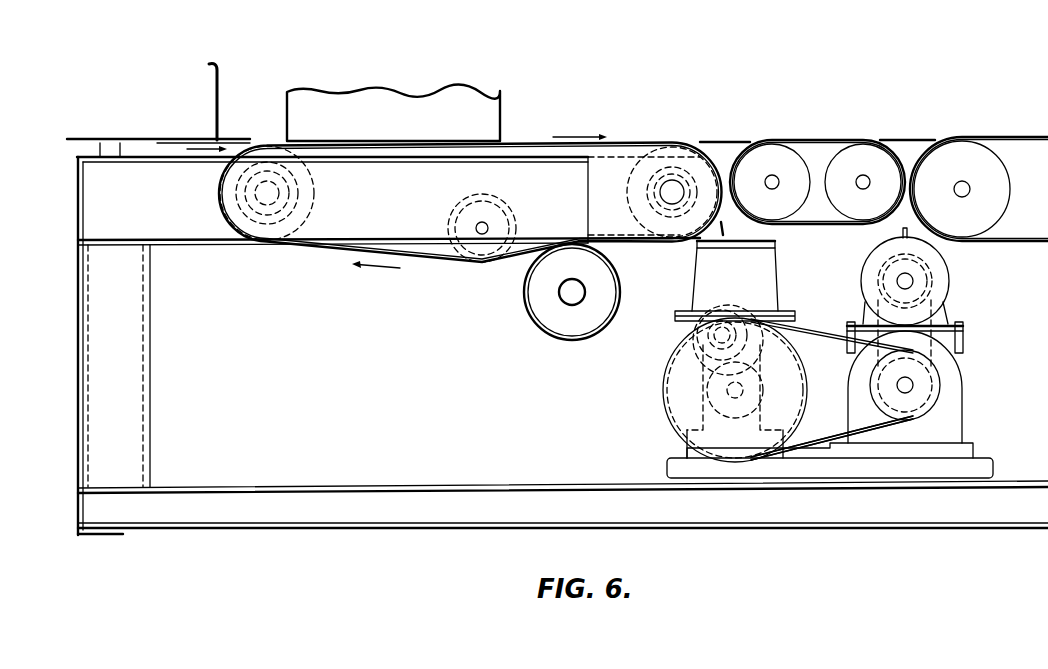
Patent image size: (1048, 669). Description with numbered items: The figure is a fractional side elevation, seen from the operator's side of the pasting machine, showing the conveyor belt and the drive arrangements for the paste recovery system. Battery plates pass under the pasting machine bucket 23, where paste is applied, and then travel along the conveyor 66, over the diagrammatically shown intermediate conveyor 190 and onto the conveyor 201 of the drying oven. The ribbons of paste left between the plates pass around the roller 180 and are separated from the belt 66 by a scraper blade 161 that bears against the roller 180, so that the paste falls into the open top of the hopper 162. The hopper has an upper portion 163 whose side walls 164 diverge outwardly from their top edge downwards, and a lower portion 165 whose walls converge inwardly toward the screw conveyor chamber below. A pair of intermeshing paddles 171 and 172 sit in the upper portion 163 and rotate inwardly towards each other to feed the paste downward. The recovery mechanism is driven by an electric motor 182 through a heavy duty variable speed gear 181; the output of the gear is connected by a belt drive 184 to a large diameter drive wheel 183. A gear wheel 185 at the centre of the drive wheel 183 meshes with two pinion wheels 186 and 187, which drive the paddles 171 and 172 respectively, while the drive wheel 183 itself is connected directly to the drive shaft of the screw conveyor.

The pasting machine bucket 23 is at (502, 110).
The conveyor 66 is at (628, 143).
The roller 180 is at (627, 197).
The scraper blade 161 is at (727, 225).
The intermediate conveyor 190 is at (816, 133).
The conveyor 201 is at (978, 127).
The upper portion 163 is at (686, 268).
The side walls 164 is at (778, 288).
The hopper 162 is at (661, 322).
The paddle 171 is at (790, 327).
The paddle 172 is at (717, 302).
The pinion wheel 187 is at (698, 360).
The pinion wheel 186 is at (780, 360).
The drive wheel 183 is at (675, 428).
The gear wheel 185 is at (707, 397).
The lower portion 165 is at (783, 376).
The belt drive 184 is at (806, 446).
The electric motor 182 is at (950, 280).
The variable speed gear 181 is at (958, 377).